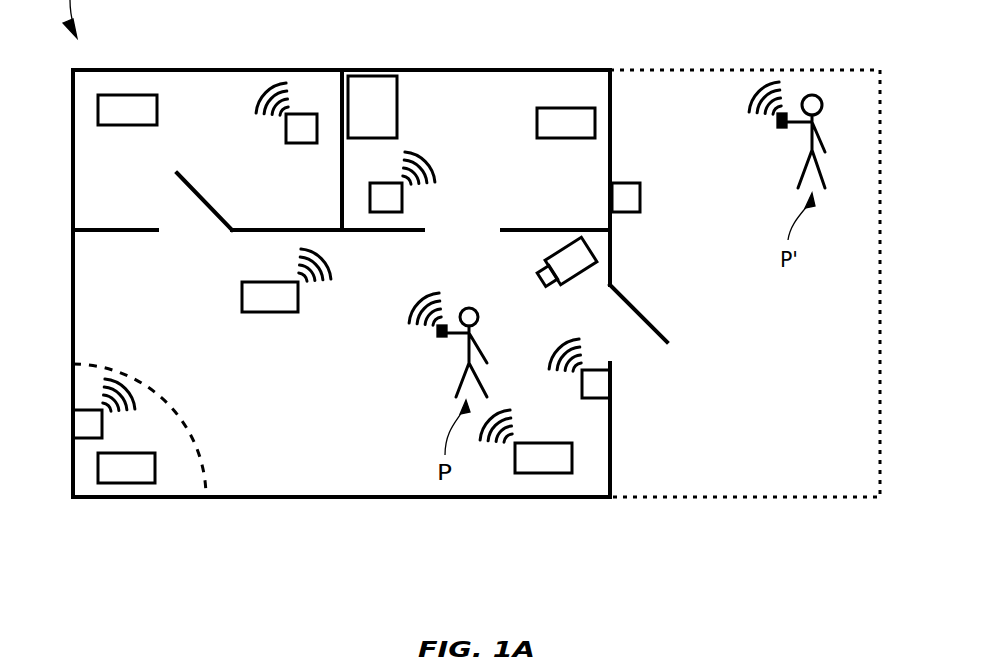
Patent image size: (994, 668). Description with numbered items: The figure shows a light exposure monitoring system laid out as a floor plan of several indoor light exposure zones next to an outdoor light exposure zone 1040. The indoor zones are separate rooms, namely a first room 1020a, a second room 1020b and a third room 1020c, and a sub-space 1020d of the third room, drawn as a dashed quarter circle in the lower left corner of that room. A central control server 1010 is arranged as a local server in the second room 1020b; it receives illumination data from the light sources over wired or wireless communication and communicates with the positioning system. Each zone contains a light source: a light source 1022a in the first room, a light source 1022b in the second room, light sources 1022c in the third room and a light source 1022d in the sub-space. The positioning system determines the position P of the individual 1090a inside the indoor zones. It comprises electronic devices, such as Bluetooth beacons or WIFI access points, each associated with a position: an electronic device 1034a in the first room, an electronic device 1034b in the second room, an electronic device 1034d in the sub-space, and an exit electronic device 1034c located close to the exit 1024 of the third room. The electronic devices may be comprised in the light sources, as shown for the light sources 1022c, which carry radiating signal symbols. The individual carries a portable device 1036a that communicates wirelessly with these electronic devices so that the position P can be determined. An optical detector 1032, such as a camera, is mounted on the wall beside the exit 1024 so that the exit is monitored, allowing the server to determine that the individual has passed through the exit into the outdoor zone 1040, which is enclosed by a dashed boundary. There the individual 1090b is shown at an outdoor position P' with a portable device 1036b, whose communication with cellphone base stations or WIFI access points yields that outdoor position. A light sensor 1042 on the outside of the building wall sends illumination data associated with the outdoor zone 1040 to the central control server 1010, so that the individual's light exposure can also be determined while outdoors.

The central control server 1010 is at (382, 92).
The first room 1020a is at (240, 161).
The second room 1020b is at (507, 161).
The third room 1020c is at (373, 378).
The sub-space 1020d is at (178, 470).
The light source 1022a is at (127, 110).
The light source 1022b is at (560, 120).
The light sources 1022c is at (258, 297).
The light source 1022d is at (127, 467).
The exit 1024 is at (645, 352).
The optical detector 1032 is at (585, 256).
The electronic device 1034a is at (305, 128).
The electronic device 1034b is at (390, 198).
The exit electronic device 1034c is at (598, 388).
The electronic device 1034d is at (85, 425).
The portable device 1036a is at (440, 340).
The portable device 1036b is at (780, 132).
The outdoor light exposure zone 1040 is at (770, 293).
The light sensor 1042 is at (630, 200).
The individual 1090a is at (474, 336).
The individual 1090b is at (815, 125).